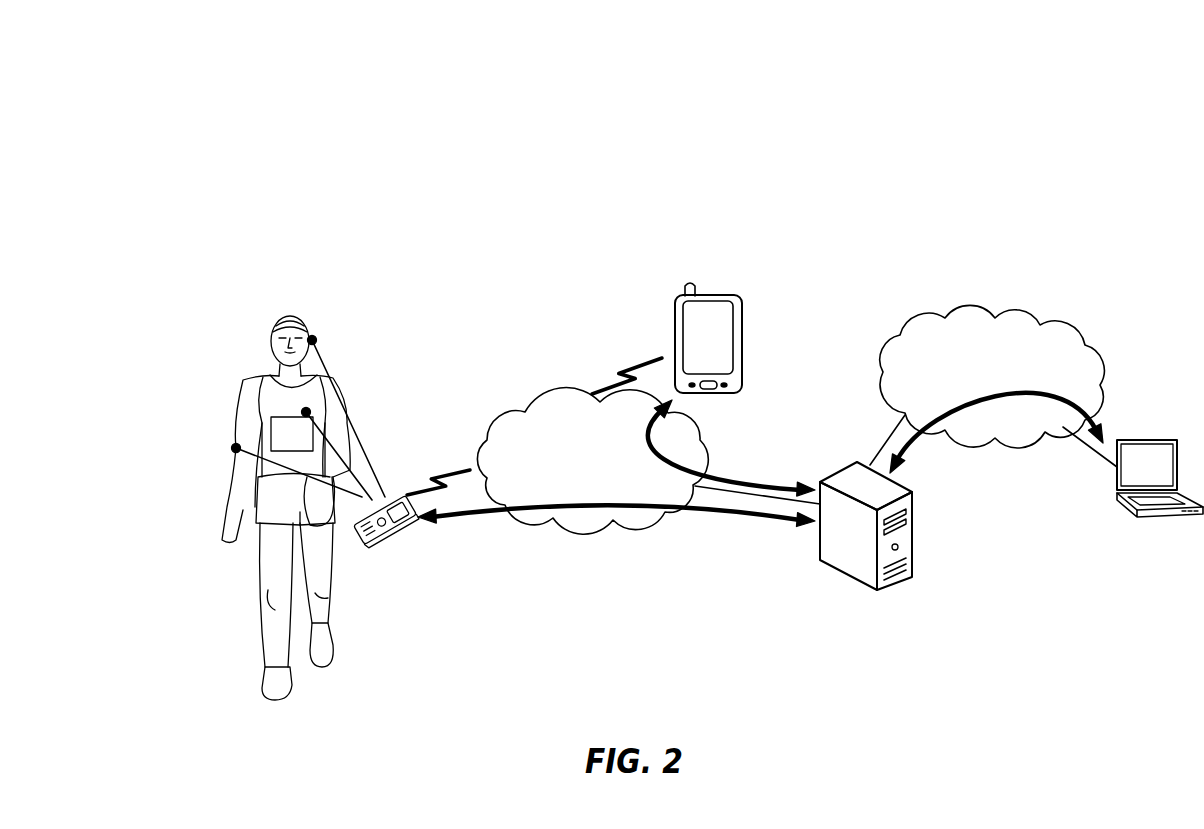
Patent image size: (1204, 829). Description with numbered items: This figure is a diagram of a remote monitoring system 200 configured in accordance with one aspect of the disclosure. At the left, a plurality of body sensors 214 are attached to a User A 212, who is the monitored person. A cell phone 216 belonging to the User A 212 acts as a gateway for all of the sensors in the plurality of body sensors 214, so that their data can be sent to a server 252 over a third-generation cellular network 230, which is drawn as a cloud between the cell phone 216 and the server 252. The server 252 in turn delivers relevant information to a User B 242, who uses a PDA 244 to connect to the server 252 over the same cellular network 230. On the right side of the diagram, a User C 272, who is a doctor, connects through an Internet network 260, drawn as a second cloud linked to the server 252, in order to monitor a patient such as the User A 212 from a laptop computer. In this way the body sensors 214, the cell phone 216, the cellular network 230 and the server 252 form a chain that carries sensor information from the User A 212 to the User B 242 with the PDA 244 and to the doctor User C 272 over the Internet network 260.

The remote monitoring system 200 is at (94, 77).
The User A 212 is at (278, 273).
The body sensors 214 is at (314, 337).
The cell phone 216 is at (390, 540).
The 3G network 230 is at (693, 423).
The User B 242 is at (700, 240).
The PDA 244 is at (743, 308).
The server 252 is at (897, 480).
The Internet network 260 is at (1028, 320).
The User C 272 is at (1137, 407).